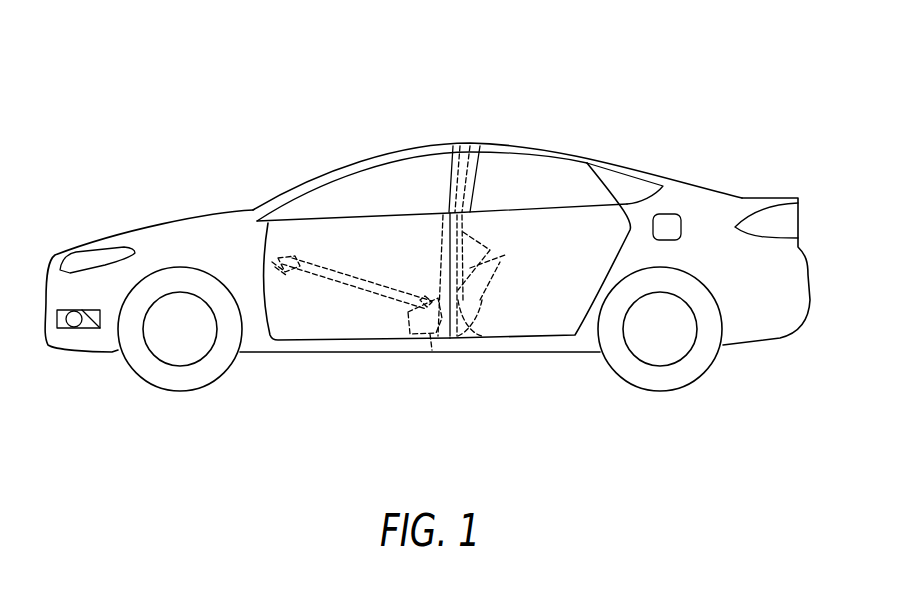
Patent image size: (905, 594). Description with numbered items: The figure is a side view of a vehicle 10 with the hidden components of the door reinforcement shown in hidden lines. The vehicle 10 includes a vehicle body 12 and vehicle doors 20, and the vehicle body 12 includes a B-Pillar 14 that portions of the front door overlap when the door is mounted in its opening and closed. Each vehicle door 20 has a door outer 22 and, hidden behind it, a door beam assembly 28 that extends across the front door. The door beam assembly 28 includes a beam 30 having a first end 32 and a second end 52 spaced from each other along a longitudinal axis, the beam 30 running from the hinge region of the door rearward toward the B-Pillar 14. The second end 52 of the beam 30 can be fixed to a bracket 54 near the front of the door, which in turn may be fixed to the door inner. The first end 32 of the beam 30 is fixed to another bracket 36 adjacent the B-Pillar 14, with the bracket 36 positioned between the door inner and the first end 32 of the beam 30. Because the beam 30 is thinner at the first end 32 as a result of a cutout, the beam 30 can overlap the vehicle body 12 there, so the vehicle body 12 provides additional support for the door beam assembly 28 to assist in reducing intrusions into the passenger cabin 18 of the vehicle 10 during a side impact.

The vehicle 10 is at (737, 70).
The vehicle body 12 is at (323, 360).
The B-Pillar 14 is at (490, 250).
The passenger cabin 18 is at (401, 183).
The vehicle door 20 is at (318, 236).
The door outer 22 is at (312, 308).
The door beam assembly 28 is at (343, 257).
The beam 30 is at (363, 297).
The first end 32 is at (422, 296).
The bracket 36 is at (432, 330).
The second end 52 is at (290, 251).
The bracket 54 is at (262, 251).